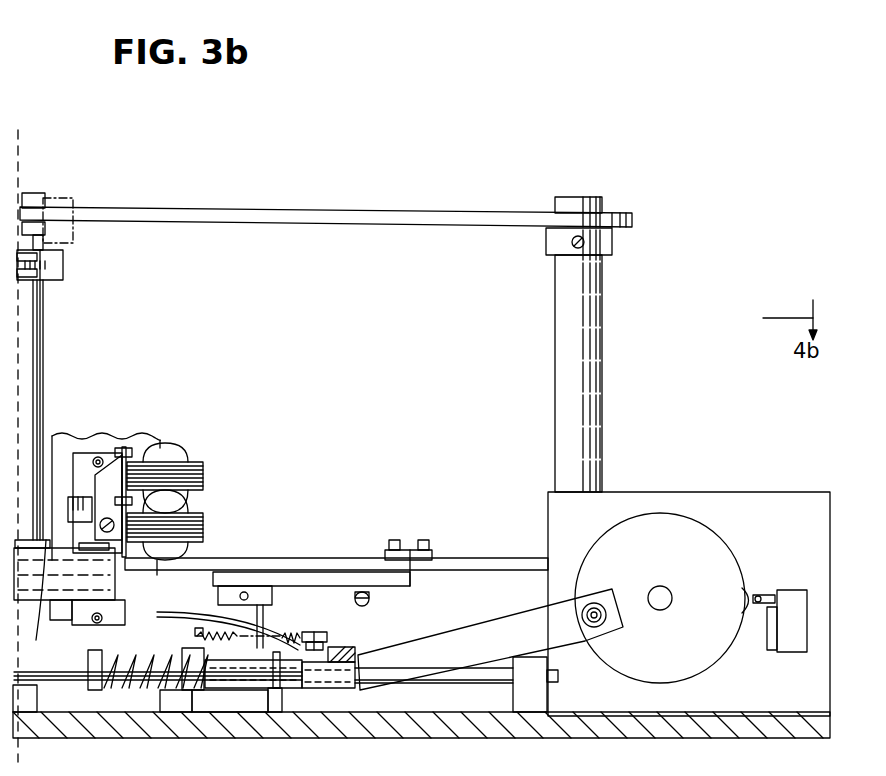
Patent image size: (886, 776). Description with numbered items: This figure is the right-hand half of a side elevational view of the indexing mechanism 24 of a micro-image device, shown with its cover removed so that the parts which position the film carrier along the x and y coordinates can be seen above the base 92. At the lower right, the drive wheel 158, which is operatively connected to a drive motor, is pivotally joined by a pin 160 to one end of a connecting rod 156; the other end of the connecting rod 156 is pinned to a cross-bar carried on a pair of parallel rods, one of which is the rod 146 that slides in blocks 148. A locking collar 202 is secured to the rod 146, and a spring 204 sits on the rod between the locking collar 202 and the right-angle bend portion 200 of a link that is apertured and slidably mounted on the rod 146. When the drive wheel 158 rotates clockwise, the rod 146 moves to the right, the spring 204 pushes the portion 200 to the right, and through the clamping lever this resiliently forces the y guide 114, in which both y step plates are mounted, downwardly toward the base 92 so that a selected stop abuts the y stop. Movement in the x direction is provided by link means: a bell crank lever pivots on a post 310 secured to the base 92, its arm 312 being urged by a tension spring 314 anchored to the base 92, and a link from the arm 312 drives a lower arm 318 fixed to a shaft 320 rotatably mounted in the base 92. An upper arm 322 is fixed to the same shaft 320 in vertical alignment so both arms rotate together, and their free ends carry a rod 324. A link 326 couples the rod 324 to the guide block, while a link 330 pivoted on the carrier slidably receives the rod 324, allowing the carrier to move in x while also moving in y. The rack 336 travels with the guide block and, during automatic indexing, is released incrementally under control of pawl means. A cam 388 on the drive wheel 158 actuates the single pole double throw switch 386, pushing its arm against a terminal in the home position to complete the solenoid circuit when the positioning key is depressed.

The indexing mechanism 24 is at (100, 160).
The base 92 is at (128, 740).
The y guide 114 is at (112, 625).
The rod 146 is at (442, 684).
The blocks 148 is at (550, 708).
The connecting rod 156 is at (458, 636).
The drive wheel 158 is at (686, 668).
The pin 160 is at (594, 604).
The right-angle bend portion 200 is at (293, 690).
The locking collar 202 is at (94, 690).
The spring 204 is at (152, 680).
The post 310 is at (262, 622).
The arm 312 is at (337, 588).
The tension spring 314 is at (406, 546).
The lower arm 318 is at (442, 574).
The shaft 320 is at (556, 322).
The upper arm 322 is at (356, 208).
The rod 324 is at (43, 320).
The link 326 is at (35, 634).
The link 330 is at (64, 272).
The rack 336 is at (87, 550).
The single pole double throw switch 386 is at (790, 600).
The cam 388 is at (748, 588).